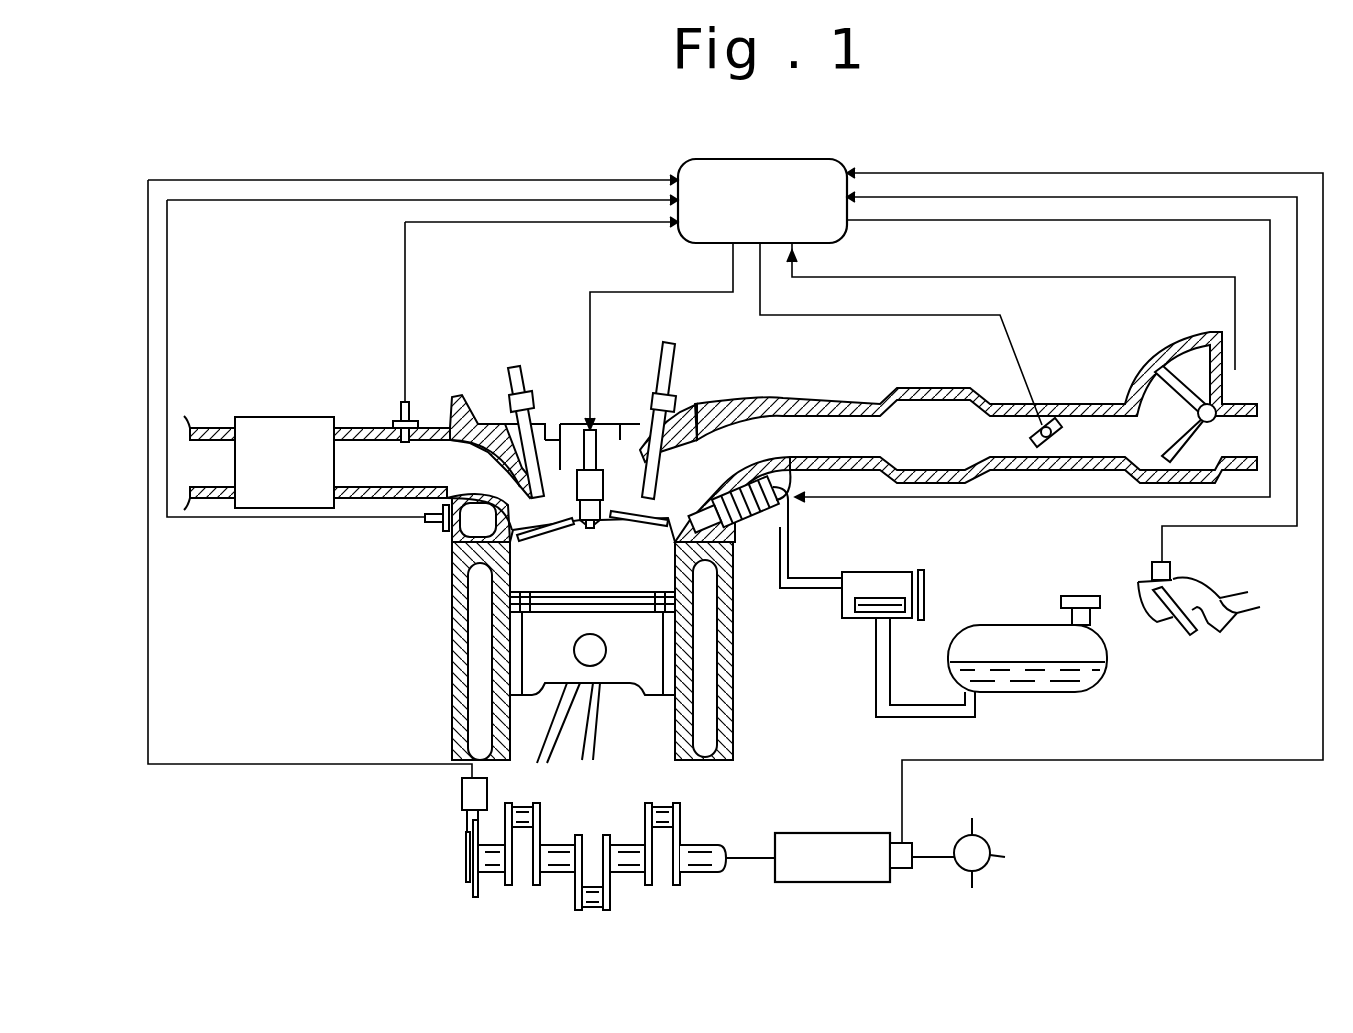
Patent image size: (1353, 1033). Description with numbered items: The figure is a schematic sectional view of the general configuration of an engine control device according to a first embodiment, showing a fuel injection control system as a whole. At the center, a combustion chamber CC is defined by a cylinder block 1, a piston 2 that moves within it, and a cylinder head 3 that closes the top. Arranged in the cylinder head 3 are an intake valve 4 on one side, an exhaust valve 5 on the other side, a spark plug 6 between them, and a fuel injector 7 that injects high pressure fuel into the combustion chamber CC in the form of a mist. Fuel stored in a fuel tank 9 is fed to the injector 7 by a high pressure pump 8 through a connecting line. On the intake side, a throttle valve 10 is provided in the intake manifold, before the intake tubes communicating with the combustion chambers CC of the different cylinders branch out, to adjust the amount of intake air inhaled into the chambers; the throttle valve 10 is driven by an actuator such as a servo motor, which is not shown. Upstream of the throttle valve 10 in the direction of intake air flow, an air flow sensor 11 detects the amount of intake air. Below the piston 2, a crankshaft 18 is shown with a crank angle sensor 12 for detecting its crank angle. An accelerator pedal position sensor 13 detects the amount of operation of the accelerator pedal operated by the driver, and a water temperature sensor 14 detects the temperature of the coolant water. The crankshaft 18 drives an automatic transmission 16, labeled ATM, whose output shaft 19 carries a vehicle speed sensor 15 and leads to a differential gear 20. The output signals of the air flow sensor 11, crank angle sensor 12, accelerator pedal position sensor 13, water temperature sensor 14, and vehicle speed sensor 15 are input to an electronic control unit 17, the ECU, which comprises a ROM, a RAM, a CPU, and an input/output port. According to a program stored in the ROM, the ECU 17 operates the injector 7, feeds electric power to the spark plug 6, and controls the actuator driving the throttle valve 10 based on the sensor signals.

The cylinder 1 is at (735, 720).
The piston 2 is at (672, 648).
The cylinder head 3 is at (556, 430).
The intake valve 4 is at (672, 362).
The exhaust valve 5 is at (516, 365).
The spark plug 6 is at (578, 440).
The fuel injector 7 is at (753, 532).
The high pressure pump 8 is at (890, 572).
The fuel tank 9 is at (1020, 625).
The throttle valve 10 is at (1050, 420).
The air flow sensor 11 is at (1170, 368).
The crank angle sensor 12 is at (462, 792).
The accelerator pedal position sensor 13 is at (1175, 575).
The water temperature sensor 14 is at (440, 528).
The vehicle speed sensor 15 is at (905, 845).
The automatic transmission 16 is at (825, 833).
The electronic control unit 17 is at (700, 245).
The crankshaft 18 is at (712, 848).
The output shaft 19 is at (937, 850).
The differential gear 20 is at (1005, 857).
The combustion chamber CC is at (540, 568).